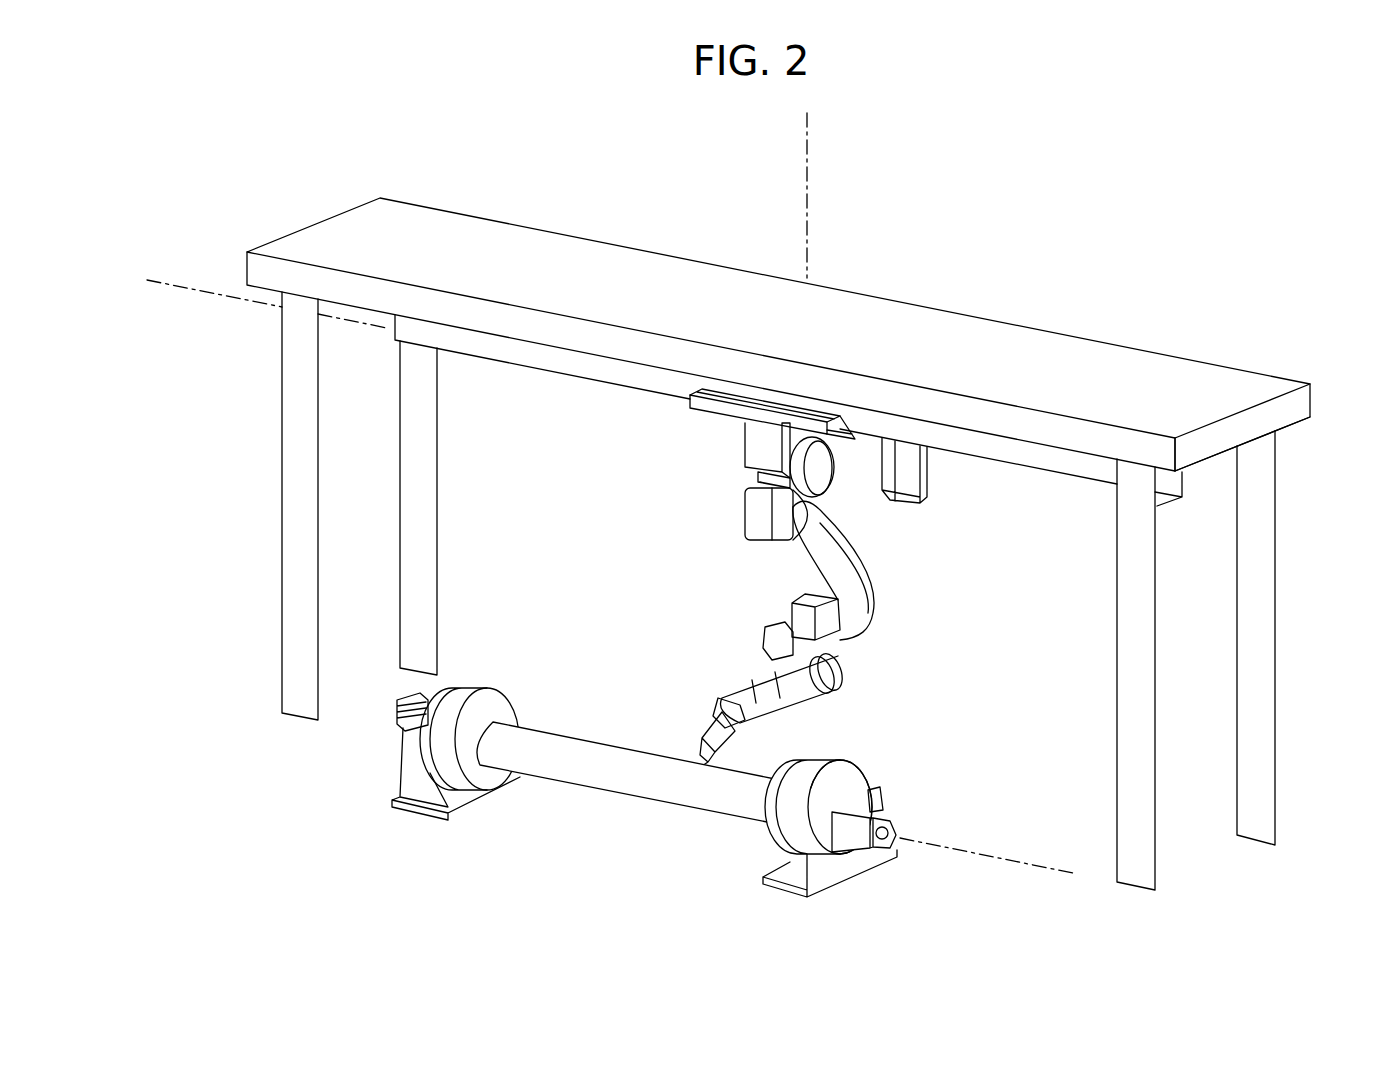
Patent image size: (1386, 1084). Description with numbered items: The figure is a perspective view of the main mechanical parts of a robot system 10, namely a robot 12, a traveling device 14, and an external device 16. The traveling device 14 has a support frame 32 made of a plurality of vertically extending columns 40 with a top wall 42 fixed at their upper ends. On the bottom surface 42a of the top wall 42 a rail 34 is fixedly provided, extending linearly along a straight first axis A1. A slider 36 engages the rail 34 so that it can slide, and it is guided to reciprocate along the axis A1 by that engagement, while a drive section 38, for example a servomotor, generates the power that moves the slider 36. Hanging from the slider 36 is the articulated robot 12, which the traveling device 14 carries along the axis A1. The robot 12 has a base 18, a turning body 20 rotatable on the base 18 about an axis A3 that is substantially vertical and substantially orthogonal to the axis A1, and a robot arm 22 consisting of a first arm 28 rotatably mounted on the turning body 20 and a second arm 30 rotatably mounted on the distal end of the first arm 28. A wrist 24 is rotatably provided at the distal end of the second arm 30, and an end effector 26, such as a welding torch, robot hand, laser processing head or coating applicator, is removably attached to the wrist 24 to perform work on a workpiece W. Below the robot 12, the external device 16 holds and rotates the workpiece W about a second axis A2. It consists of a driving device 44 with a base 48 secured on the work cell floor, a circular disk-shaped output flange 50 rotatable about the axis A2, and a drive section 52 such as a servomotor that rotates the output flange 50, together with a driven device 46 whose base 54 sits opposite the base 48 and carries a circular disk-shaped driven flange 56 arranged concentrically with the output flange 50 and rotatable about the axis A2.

The robot system 10 is at (1261, 146).
The robot 12 is at (741, 616).
The traveling device 14 is at (1104, 325).
The external device 16 is at (648, 820).
The base 18 is at (745, 440).
The turning body 20 is at (745, 505).
The robot arm 22 is at (905, 648).
The wrist 24 is at (723, 694).
The end effector 26 is at (706, 744).
The first arm 28 is at (847, 610).
The second arm 30 is at (797, 690).
The support frame 32 is at (443, 202).
The rail 34 is at (1023, 467).
The slider 36 is at (690, 400).
The drive section 38 is at (908, 502).
The columns 40 is at (400, 450).
The top wall 42 is at (513, 226).
The bottom surface 42a is at (1205, 462).
The driving device 44 is at (406, 816).
The driven device 46 is at (875, 878).
The base 48 is at (420, 780).
The output flange 50 is at (503, 712).
The drive section 52 is at (405, 700).
The base 54 is at (788, 862).
The driven flange 56 is at (775, 745).
The workpiece W is at (593, 777).
The axis A1 is at (237, 300).
The axis A2 is at (980, 853).
The axis A3 is at (812, 195).